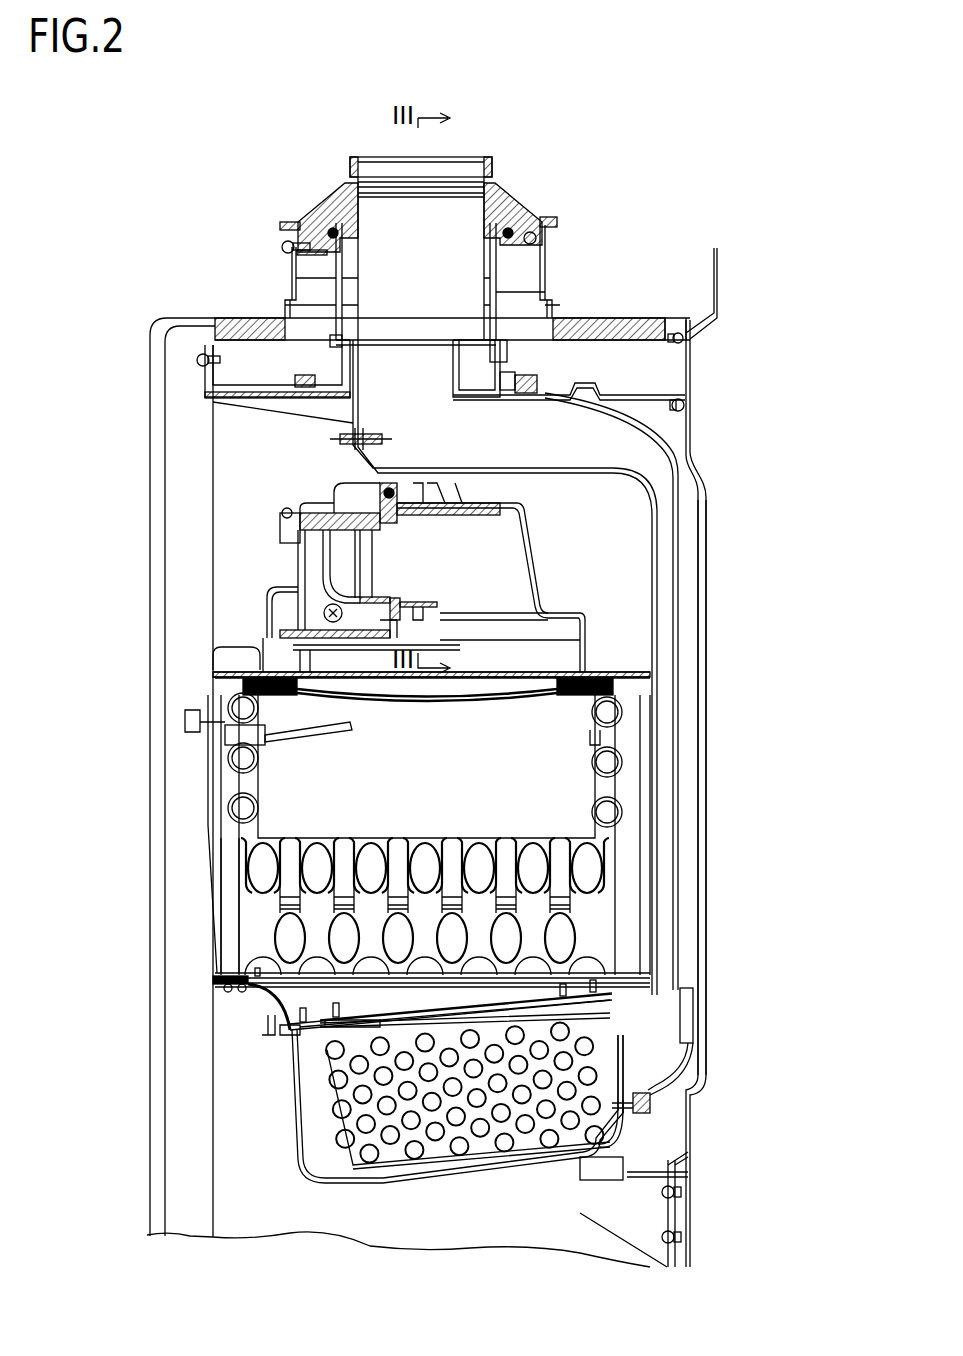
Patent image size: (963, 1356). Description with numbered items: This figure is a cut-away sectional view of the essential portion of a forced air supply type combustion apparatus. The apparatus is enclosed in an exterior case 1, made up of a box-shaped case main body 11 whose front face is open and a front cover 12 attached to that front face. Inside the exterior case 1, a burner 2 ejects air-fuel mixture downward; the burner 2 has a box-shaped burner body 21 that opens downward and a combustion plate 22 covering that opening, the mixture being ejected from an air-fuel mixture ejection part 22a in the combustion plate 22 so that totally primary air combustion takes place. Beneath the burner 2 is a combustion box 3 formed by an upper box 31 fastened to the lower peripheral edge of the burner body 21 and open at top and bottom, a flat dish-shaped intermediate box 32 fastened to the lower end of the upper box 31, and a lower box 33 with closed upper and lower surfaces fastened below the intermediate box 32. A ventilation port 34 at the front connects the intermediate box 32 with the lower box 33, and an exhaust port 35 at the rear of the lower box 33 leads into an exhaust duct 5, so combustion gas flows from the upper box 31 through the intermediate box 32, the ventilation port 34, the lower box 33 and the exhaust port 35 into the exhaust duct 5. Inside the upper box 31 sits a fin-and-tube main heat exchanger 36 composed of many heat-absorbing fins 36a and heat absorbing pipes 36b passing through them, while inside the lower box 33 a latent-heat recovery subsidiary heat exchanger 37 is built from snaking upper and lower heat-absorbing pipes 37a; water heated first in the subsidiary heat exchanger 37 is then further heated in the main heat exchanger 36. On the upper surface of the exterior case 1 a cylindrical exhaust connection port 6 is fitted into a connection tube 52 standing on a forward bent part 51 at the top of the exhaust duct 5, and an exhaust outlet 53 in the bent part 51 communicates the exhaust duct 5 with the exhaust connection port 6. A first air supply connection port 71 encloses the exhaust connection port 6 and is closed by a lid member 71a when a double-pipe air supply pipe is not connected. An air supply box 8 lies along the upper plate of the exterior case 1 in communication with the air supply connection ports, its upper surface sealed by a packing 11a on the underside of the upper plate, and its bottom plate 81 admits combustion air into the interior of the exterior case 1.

The exterior case 1 is at (628, 312).
The burner 2 is at (540, 542).
The combustion box 3 is at (80, 952).
The exhaust duct 5 is at (703, 505).
The exhaust connection port 6 is at (497, 267).
The air supply box 8 is at (260, 392).
The case main body 11 is at (702, 473).
The packing 11a is at (620, 340).
The front cover 12 is at (165, 628).
The burner body 21 is at (540, 578).
The combustion plate 22 is at (553, 700).
The air-fuel mixture ejection part 22a is at (437, 705).
The upper box 31 is at (240, 918).
The intermediate box 32 is at (305, 987).
The lower box 33 is at (290, 1087).
The ventilation port 34 is at (330, 1025).
The exhaust port 35 is at (632, 1075).
The main heat exchanger 36 is at (363, 835).
The heat-absorbing fins 36a is at (493, 843).
The heat absorbing pipes 36b is at (413, 843).
The subsidiary heat exchanger 37 is at (327, 1122).
The heat-absorbing pipes 37a is at (440, 1160).
The bent part 51 is at (490, 472).
The connection tube 52 is at (333, 368).
The exhaust outlet 53 is at (457, 377).
The first air supply connection port 71 is at (292, 292).
The lid member 71a is at (328, 200).
The bottom plate 81 is at (283, 392).